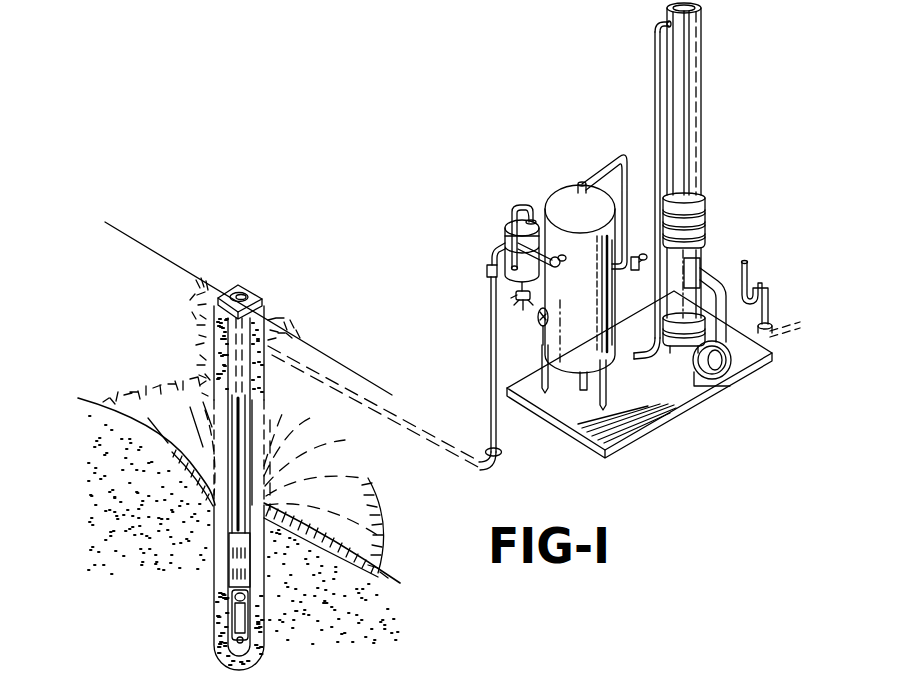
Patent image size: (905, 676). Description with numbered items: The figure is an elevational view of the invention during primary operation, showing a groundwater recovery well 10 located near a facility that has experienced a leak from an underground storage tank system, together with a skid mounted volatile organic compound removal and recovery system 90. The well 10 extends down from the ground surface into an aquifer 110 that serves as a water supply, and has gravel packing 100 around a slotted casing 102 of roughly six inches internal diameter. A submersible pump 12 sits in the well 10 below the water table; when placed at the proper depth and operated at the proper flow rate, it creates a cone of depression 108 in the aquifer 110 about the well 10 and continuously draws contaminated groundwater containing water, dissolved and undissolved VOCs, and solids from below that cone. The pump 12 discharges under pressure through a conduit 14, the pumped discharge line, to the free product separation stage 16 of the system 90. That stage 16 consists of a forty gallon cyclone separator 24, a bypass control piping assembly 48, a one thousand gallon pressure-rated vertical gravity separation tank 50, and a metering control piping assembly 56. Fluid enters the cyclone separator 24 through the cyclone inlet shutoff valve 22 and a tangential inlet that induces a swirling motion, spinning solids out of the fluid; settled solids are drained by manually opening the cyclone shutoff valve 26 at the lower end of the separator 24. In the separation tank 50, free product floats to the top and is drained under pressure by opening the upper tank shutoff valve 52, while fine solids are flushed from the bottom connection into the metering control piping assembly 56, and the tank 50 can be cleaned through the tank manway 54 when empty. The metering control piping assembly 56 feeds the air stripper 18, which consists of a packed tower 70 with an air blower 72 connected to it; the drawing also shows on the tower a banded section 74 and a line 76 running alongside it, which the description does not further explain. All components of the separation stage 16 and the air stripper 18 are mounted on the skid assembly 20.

The recovery well 10 is at (245, 300).
The submersible pump 12 is at (255, 600).
The conduit 14 is at (394, 415).
The free product separation stage 16 is at (530, 182).
The air stripper 18 is at (720, 127).
The skid assembly 20 is at (715, 398).
The cyclone inlet shutoff valve 22 is at (487, 273).
The cyclone separator 24 is at (520, 217).
The cyclone shutoff valve 26 is at (513, 295).
The bypass control piping assembly 48 is at (553, 267).
The vertical gravity separation tank 50 is at (563, 198).
The upper tank shutoff valve 52 is at (638, 270).
The tank manway 54 is at (545, 340).
The metering control piping assembly 56 is at (664, 366).
The packed tower 70 is at (703, 164).
The air blower 72 is at (742, 352).
The coupling collar 74 is at (706, 238).
The fluid line 76 is at (702, 38).
The VOC removal and recovery system 90 is at (666, 462).
The gravel packing 100 is at (262, 388).
The slotted casing 102 is at (252, 553).
The cone of depression 108 is at (338, 448).
The aquifer 110 is at (155, 542).